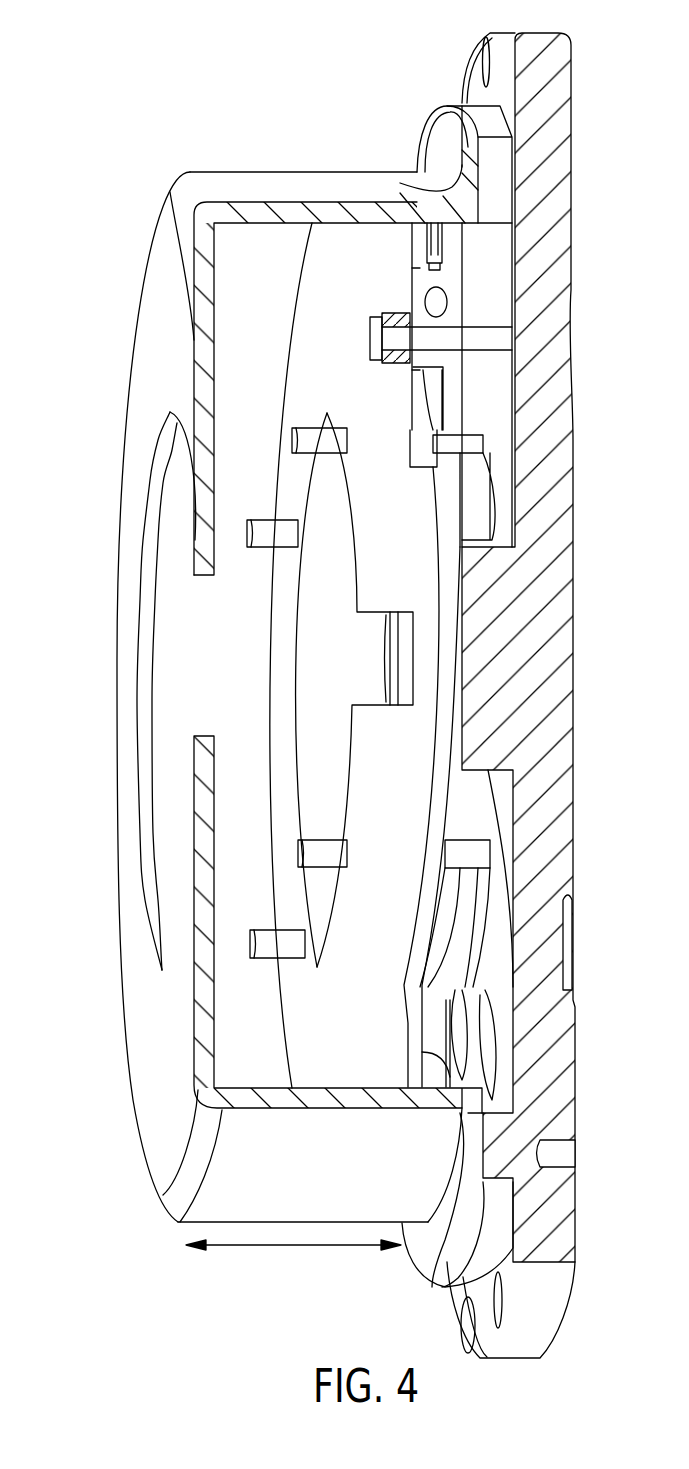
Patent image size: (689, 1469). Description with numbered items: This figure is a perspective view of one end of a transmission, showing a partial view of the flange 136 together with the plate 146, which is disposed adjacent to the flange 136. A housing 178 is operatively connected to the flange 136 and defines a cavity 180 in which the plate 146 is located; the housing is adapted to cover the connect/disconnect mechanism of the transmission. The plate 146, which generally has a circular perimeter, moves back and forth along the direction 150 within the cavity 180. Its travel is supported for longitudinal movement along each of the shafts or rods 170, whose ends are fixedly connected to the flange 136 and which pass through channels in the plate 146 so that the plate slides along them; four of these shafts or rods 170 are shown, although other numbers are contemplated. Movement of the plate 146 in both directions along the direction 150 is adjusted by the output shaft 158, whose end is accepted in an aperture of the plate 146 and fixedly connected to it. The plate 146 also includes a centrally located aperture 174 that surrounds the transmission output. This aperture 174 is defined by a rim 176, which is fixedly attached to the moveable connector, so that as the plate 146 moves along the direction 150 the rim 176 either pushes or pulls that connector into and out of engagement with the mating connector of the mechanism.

The flange 136 is at (477, 75).
The plate 146 is at (377, 290).
The direction 150 is at (281, 1247).
The output shaft 158 is at (480, 336).
The shaft or rod 170 is at (292, 437).
The centrally located aperture 174 is at (348, 770).
The rim 176 is at (280, 643).
The housing 178 is at (164, 1079).
The cavity 180 is at (168, 871).